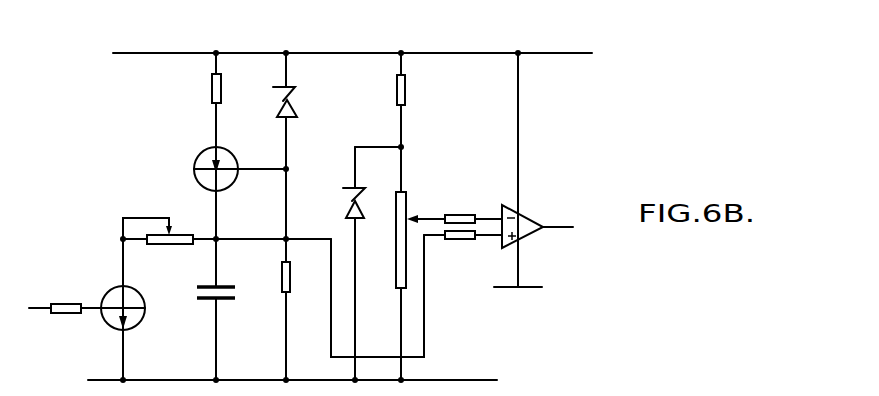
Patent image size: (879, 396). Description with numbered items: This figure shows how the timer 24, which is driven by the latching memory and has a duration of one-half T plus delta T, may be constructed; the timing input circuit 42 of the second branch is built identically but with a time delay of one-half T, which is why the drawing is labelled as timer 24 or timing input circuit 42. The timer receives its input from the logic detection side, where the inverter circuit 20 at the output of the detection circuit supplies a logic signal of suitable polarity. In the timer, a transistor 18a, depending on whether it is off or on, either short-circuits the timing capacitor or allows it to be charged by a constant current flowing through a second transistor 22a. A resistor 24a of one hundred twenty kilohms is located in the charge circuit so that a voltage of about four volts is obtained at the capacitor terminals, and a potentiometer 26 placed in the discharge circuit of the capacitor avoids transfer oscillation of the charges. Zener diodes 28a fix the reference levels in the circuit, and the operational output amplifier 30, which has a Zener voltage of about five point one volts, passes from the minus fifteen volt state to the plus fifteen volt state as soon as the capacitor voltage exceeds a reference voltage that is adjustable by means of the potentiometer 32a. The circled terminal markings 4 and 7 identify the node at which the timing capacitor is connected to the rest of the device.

The transistor 18a is at (105, 290).
The inverter circuit 20 is at (208, 299).
The second transistor 22a is at (200, 157).
The timer 24 is at (538, 153).
The resistor 24a is at (212, 90).
The potentiometer 26 is at (173, 244).
The zener diode 28a is at (294, 112).
The operational amplifier 30 is at (524, 216).
The potentiometer 32a is at (407, 200).
The timing input circuit 42 is at (310, 202).
The terminal 4 is at (216, 239).
The terminal 7 is at (272, 220).